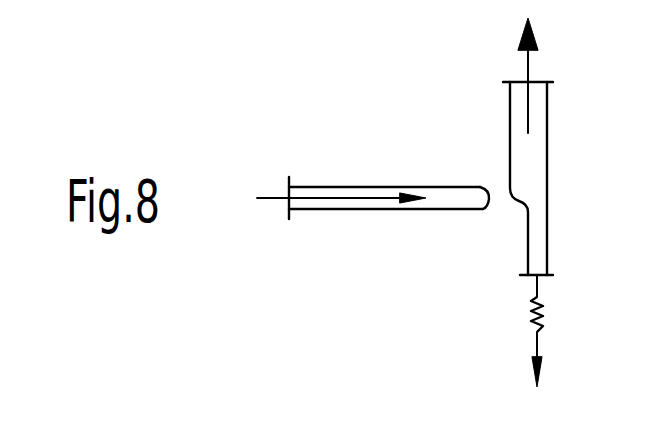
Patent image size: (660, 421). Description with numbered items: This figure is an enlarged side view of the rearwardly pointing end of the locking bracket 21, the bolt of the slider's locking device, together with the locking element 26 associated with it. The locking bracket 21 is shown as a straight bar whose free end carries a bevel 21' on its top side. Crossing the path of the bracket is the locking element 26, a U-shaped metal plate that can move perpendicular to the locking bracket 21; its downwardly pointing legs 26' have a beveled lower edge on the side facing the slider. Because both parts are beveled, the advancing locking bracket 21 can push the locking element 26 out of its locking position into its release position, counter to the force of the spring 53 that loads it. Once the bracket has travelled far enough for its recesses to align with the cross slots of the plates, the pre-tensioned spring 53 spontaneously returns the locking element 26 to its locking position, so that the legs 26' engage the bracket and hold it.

The locking bracket 21 is at (373, 234).
The bevel 21' is at (453, 232).
The locking element 26 is at (563, 202).
The legs of the locking element 26' is at (580, 250).
The spring 53 is at (545, 320).